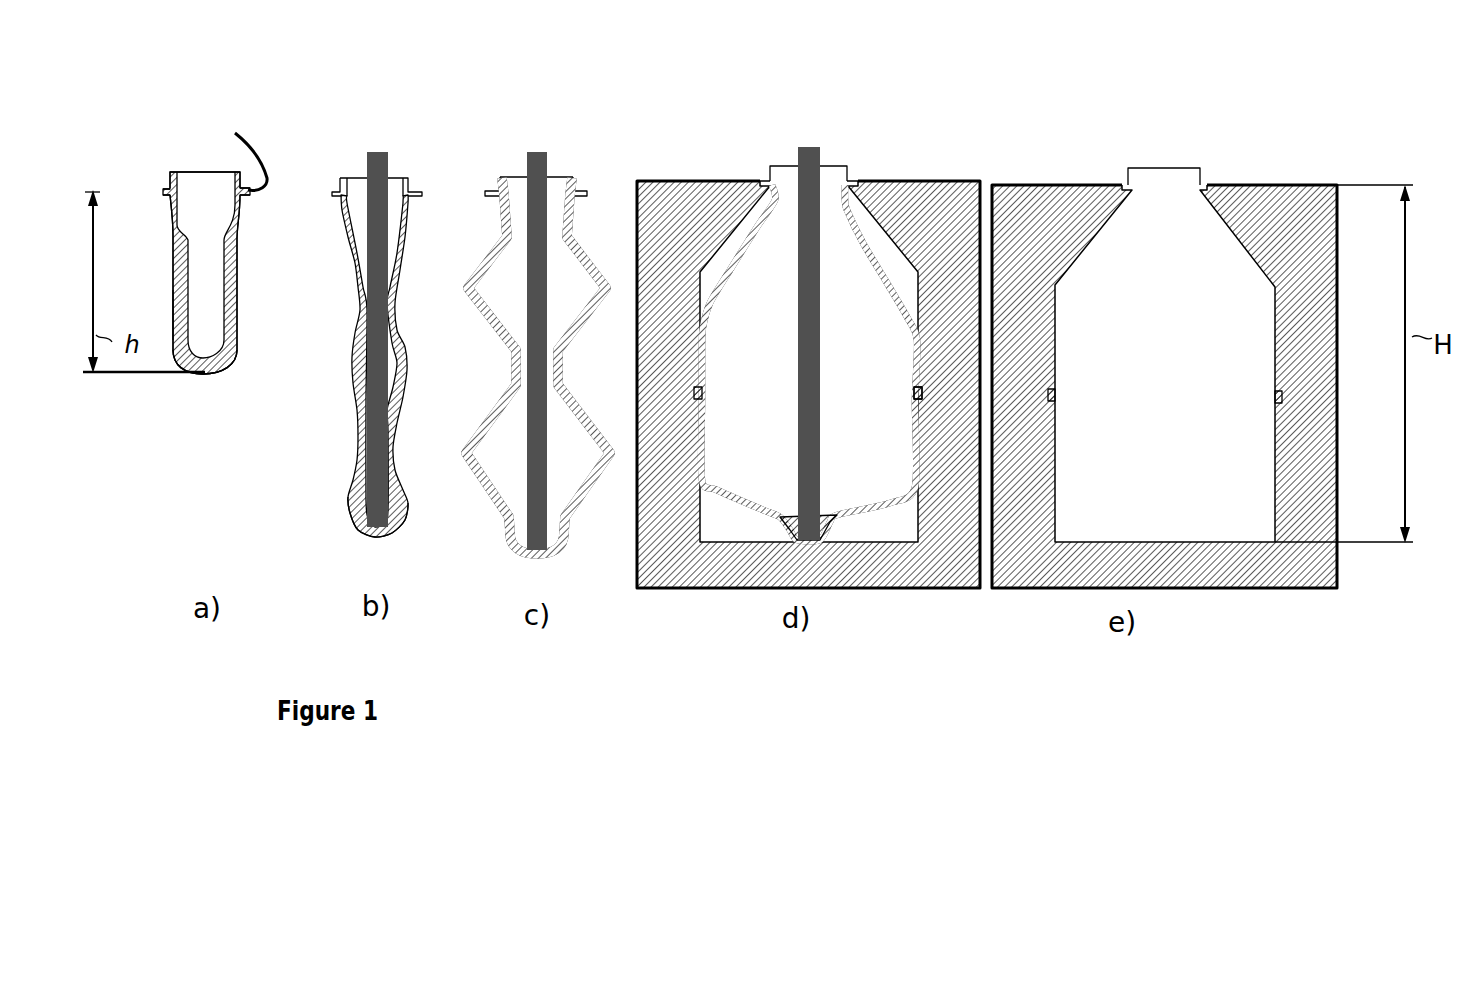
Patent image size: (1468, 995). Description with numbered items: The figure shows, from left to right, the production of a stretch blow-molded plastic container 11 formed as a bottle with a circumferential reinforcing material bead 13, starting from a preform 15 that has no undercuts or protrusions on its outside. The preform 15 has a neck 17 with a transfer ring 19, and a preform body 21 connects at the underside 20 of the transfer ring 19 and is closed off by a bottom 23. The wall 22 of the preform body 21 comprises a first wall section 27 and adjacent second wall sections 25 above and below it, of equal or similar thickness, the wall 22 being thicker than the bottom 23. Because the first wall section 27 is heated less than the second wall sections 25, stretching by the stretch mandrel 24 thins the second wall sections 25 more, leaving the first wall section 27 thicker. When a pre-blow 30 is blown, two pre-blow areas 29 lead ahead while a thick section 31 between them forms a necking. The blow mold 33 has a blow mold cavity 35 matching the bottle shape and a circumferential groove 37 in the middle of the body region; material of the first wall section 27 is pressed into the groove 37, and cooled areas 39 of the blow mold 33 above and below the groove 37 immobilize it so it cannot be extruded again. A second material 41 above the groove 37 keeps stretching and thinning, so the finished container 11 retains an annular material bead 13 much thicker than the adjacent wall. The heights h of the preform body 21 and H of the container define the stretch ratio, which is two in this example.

The plastic container 11 is at (1175, 163).
The material bead 13 is at (1278, 397).
The preform 15 is at (259, 229).
The neck 17 is at (170, 188).
The transfer ring 19 is at (163, 190).
The underside of transfer ring 20 is at (246, 145).
The preform body 21 is at (158, 280).
The wall 22 is at (173, 300).
The bottom 23 is at (203, 377).
The stretch mandrel 24 is at (365, 484).
The second wall section 25 is at (243, 252).
The first wall section 27 is at (238, 300).
The pre-blow area 29 is at (464, 450).
The pre-blow 30 is at (574, 166).
The thick section 31 is at (561, 371).
The blow mold 33 is at (697, 192).
The blow mold cavity 35 is at (886, 249).
The circumferential groove 37 is at (917, 392).
The cooled areas 39 is at (702, 432).
The second material 41 is at (915, 398).